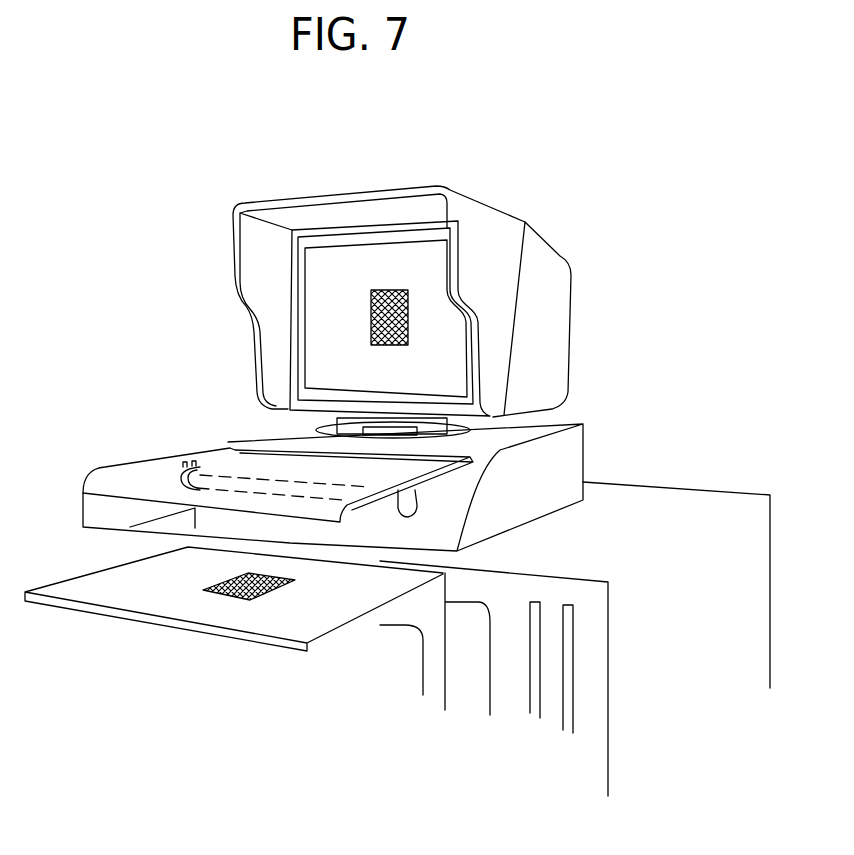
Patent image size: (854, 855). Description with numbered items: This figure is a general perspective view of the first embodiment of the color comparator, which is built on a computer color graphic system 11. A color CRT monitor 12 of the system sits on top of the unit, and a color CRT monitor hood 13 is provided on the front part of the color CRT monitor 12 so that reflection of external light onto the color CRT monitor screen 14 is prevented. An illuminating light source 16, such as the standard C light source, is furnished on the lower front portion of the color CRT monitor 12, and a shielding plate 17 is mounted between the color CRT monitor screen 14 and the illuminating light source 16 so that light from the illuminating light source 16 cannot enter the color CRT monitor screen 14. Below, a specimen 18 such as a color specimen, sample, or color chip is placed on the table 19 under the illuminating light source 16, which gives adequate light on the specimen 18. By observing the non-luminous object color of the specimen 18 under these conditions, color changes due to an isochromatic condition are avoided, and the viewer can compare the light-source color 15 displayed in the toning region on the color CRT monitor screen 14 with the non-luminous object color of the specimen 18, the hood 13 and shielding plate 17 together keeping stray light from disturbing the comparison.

The computer color graphic system 11 is at (590, 393).
The color CRT monitor 12 is at (550, 258).
The color CRT monitor hood 13 is at (240, 237).
The color CRT monitor screen 14 is at (332, 342).
The light-source color 15 is at (371, 305).
The illuminating light source 16 is at (402, 518).
The shielding plate 17 is at (160, 473).
The specimen 18 is at (258, 600).
The table 19 is at (133, 600).